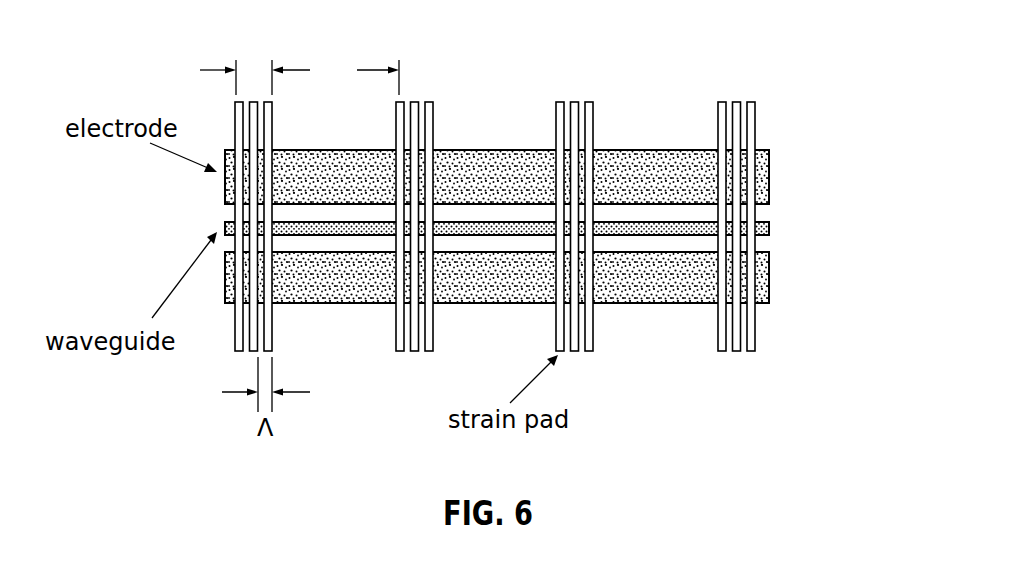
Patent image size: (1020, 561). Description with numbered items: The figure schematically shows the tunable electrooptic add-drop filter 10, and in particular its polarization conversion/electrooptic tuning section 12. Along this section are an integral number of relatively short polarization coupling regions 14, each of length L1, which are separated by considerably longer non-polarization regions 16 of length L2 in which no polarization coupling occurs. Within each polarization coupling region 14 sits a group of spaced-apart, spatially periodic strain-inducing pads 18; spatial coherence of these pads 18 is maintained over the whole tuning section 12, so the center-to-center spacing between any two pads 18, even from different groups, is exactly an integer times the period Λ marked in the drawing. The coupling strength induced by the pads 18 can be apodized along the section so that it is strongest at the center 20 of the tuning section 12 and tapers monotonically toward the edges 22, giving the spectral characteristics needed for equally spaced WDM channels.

The tunable electrooptic add-drop filter 10 is at (753, 385).
The polarization conversion/electrooptic tuning section 12 is at (662, 87).
The polarization coupling regions 14 is at (253, 50).
The non-polarization regions 16 is at (343, 50).
The strain-inducing pads 18 is at (272, 340).
The center 20 is at (473, 150).
The edges 22 is at (223, 188).